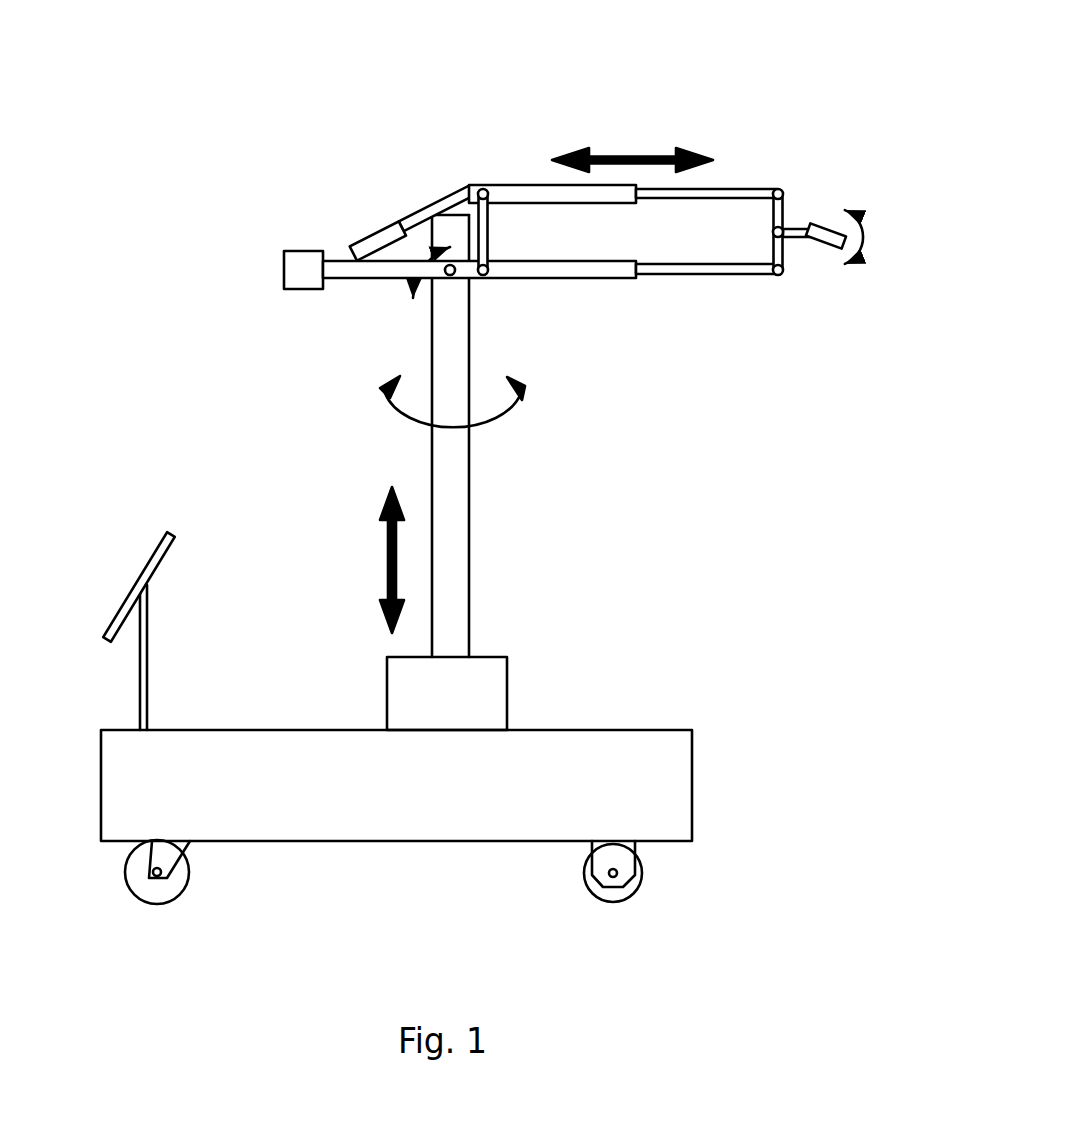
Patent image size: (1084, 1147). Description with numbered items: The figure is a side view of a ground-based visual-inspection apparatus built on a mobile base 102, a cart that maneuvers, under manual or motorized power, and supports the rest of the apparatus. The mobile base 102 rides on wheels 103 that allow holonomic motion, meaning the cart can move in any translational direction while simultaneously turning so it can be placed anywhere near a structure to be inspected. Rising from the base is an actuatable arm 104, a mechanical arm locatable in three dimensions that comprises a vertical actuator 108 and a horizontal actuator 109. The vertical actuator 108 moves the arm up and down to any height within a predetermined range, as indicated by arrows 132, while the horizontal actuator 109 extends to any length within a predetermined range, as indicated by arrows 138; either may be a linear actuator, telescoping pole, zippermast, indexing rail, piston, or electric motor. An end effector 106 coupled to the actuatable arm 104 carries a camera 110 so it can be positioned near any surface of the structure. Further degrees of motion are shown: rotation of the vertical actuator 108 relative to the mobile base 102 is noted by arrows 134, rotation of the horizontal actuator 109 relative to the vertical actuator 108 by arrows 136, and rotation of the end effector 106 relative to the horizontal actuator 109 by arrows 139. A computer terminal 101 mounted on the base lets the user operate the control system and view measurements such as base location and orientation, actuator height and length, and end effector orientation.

The computer terminal 101 is at (140, 580).
The mobile base 102 is at (293, 730).
The wheels 103 is at (142, 893).
The actuatable arm 104 is at (559, 177).
The end effector 106 is at (803, 174).
The vertical actuator 108 is at (452, 343).
The horizontal actuator 109 is at (540, 190).
The camera 110 is at (814, 221).
The arrows 132 is at (387, 538).
The arrows 134 is at (387, 415).
The arrows 136 is at (400, 221).
The arrows 138 is at (667, 153).
The arrows 139 is at (866, 232).